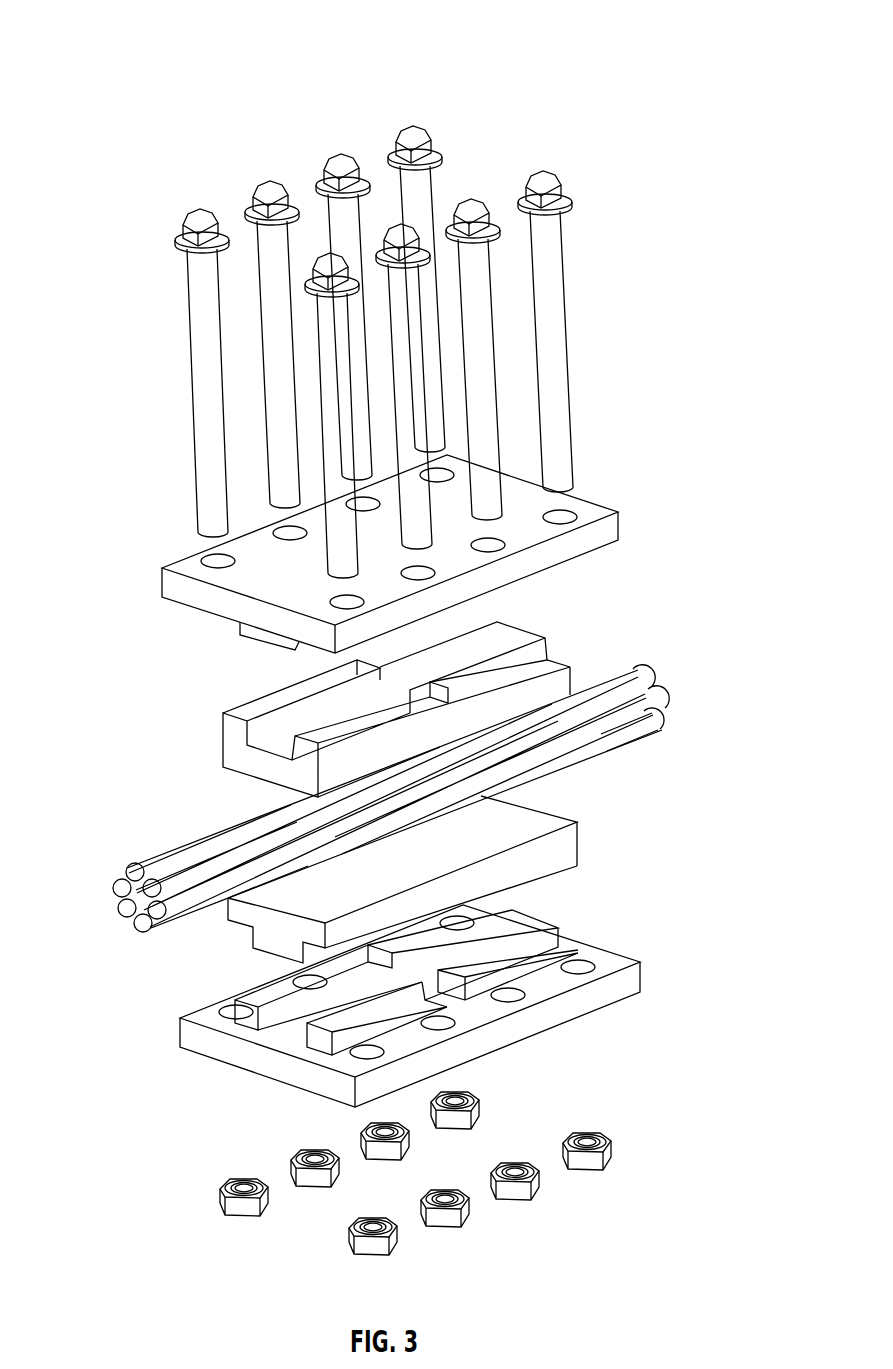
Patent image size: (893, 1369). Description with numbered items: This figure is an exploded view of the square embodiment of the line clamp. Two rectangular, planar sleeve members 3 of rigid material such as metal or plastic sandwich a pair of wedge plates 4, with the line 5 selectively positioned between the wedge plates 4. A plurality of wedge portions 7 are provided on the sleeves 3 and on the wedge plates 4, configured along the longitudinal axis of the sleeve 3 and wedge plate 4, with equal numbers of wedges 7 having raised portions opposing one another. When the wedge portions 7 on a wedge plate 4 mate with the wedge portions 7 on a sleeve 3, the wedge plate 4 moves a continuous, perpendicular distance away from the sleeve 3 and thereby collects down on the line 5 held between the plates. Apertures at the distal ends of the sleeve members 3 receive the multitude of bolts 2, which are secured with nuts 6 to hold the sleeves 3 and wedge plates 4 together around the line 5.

The bolts 2 is at (193, 392).
The sleeve members 3 is at (161, 585).
The wedge plates 4 is at (222, 750).
The line 5 is at (118, 895).
The nuts 6 is at (218, 1200).
The wedge portions 7 is at (540, 628).